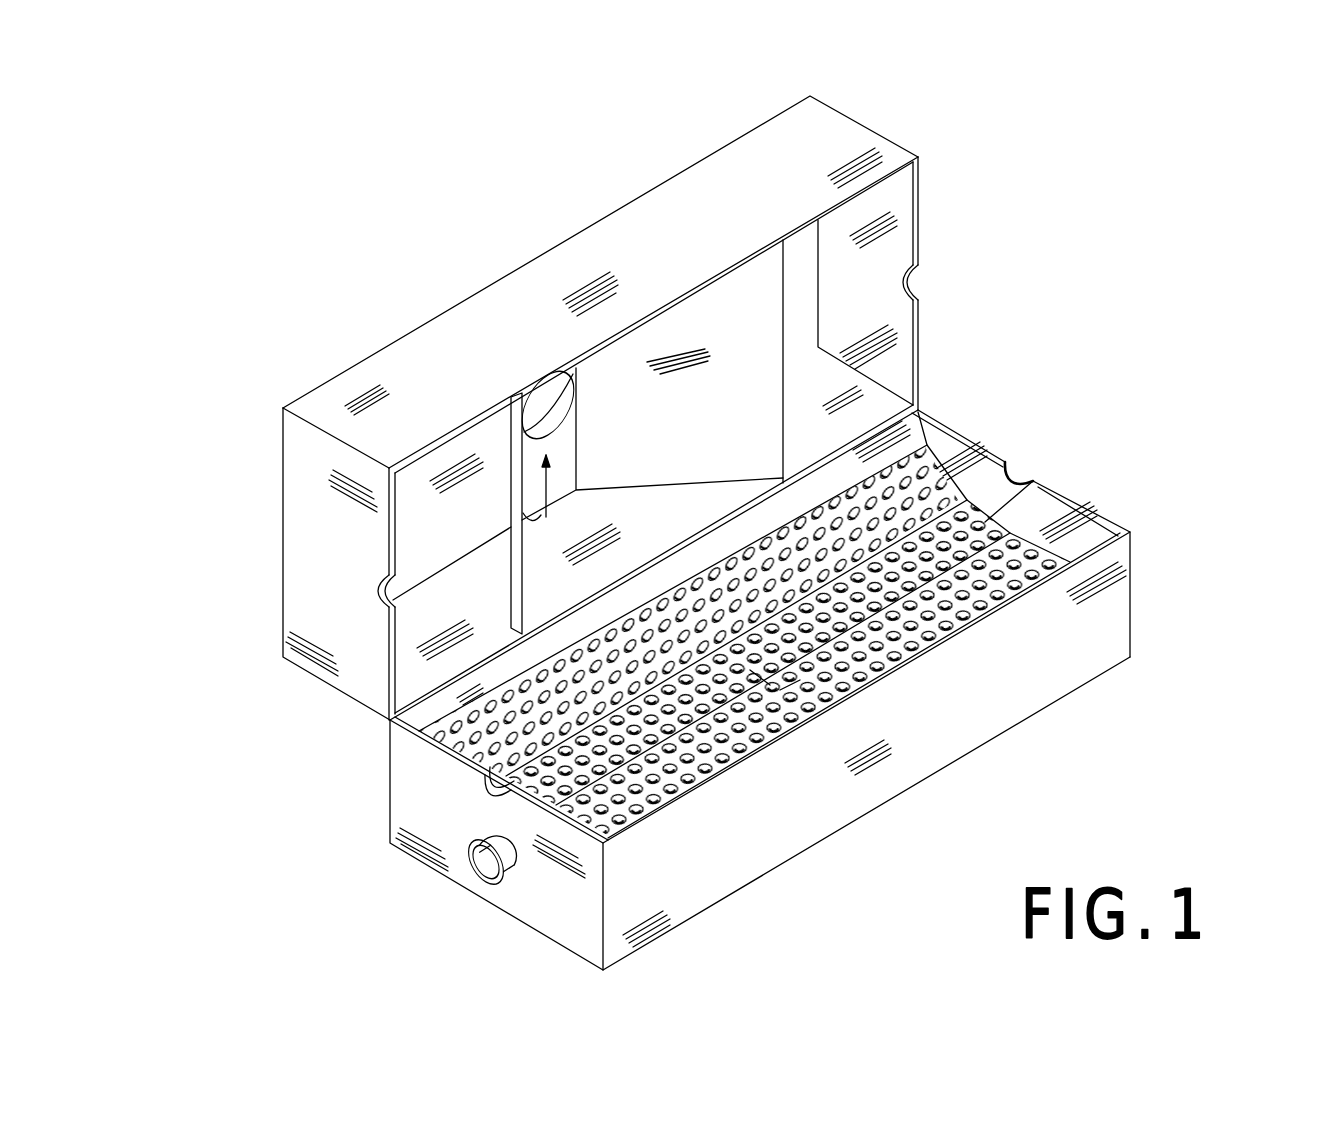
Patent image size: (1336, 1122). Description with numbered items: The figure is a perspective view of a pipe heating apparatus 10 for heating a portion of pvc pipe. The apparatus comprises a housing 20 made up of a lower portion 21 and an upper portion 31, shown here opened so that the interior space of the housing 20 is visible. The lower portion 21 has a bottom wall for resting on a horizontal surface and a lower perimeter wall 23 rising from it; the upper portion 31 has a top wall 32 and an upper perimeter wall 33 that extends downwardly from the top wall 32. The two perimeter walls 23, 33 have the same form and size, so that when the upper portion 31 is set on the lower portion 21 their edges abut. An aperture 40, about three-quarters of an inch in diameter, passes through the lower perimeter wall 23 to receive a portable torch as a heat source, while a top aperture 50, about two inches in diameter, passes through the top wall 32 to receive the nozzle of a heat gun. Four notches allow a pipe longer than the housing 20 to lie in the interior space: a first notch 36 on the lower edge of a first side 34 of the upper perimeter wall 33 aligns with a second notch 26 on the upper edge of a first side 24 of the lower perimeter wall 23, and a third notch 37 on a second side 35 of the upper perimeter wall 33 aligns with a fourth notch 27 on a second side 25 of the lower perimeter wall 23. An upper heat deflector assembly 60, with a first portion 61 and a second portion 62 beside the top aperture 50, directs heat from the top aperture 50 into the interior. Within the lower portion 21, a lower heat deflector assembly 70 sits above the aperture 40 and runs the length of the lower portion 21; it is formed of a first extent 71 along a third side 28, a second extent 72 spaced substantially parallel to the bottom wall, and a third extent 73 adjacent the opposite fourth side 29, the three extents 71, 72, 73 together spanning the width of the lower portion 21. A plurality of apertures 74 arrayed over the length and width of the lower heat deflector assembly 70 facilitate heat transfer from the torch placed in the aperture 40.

The pipe heating apparatus 10 is at (1105, 290).
The housing 20 is at (852, 800).
The lower portion 21 is at (393, 863).
The lower perimeter wall 23 is at (1110, 633).
The first side of the lower perimeter wall 24 is at (1073, 537).
The second side of the lower perimeter wall 25 is at (570, 925).
The second notch 26 is at (1033, 463).
The fourth notch 27 is at (482, 793).
The third side of the lower portion 28 is at (405, 717).
The fourth side of the lower portion 29 is at (752, 855).
The upper portion 31 is at (270, 652).
The top wall 32 is at (808, 260).
The upper perimeter wall 33 is at (848, 134).
The first side of the upper perimeter wall 34 is at (920, 335).
The second side of the upper perimeter wall 35 is at (288, 500).
The first notch 36 is at (925, 282).
The third notch 37 is at (372, 588).
The aperture 40 is at (470, 873).
The top aperture 50 is at (520, 545).
The upper heat deflector assembly 60 is at (637, 393).
The first portion 61 is at (763, 293).
The second portion 62 is at (514, 518).
The lower heat deflector assembly 70 is at (957, 473).
The first extent 71 is at (505, 737).
The second extent 72 is at (1047, 550).
The third extent 73 is at (1077, 545).
The apertures 74 is at (893, 640).